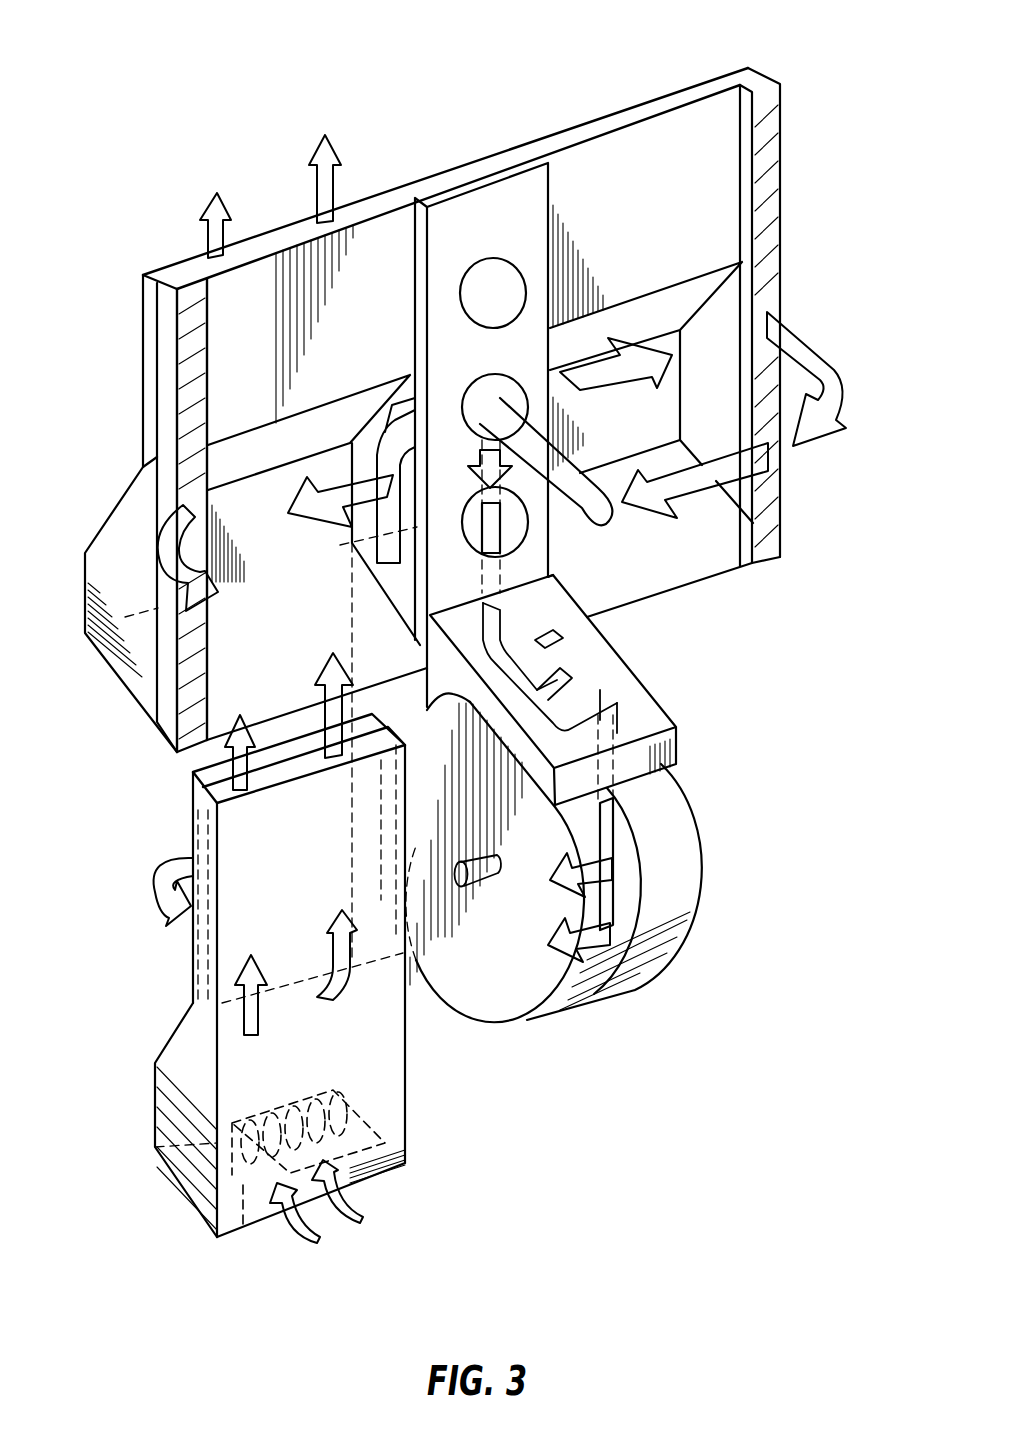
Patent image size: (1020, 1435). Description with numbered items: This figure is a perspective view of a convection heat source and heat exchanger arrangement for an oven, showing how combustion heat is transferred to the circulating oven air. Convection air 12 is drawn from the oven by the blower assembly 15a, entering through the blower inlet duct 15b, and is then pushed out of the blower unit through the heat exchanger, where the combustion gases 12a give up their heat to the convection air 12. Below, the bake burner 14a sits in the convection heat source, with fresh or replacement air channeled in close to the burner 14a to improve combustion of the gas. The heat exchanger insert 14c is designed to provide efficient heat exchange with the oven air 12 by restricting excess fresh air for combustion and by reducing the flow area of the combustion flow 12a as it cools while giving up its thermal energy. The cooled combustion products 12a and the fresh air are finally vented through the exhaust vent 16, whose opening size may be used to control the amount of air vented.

The convection air 12 is at (843, 400).
The combustion gases 12a is at (320, 148).
The exhaust vent 16 is at (642, 113).
The blower assembly 15a is at (722, 836).
The blower inlet duct 15b is at (550, 560).
The burner 14a is at (248, 1232).
The heat exchanger insert 14c is at (378, 1045).